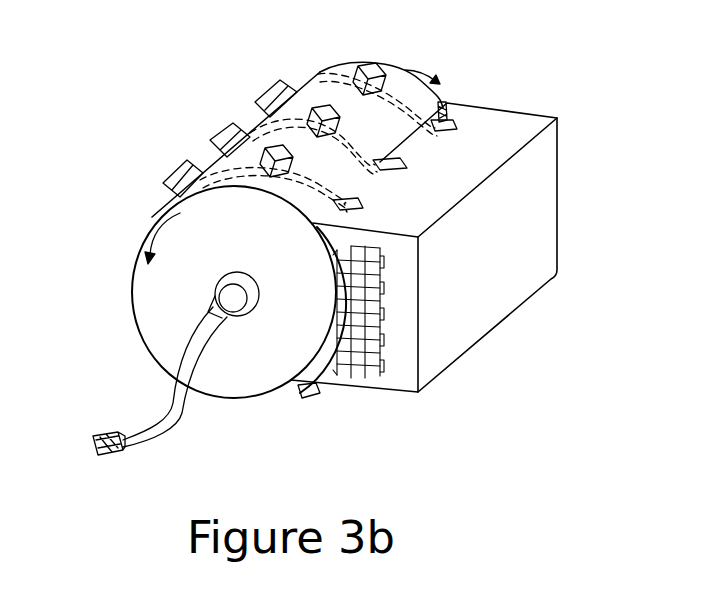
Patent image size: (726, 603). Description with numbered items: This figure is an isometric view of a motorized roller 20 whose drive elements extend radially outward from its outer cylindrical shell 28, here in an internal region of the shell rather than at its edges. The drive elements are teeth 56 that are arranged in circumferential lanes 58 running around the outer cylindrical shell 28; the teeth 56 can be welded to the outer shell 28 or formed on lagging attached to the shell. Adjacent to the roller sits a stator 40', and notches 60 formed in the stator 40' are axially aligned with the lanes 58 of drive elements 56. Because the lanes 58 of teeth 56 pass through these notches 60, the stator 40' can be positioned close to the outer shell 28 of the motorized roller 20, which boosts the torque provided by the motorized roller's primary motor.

The motorized roller 20 is at (141, 318).
The outer cylindrical shell 28 is at (212, 141).
The teeth 56 is at (373, 63).
The circumferential lanes 58 is at (321, 66).
The notches 60 is at (441, 103).
The stator 40' is at (424, 248).